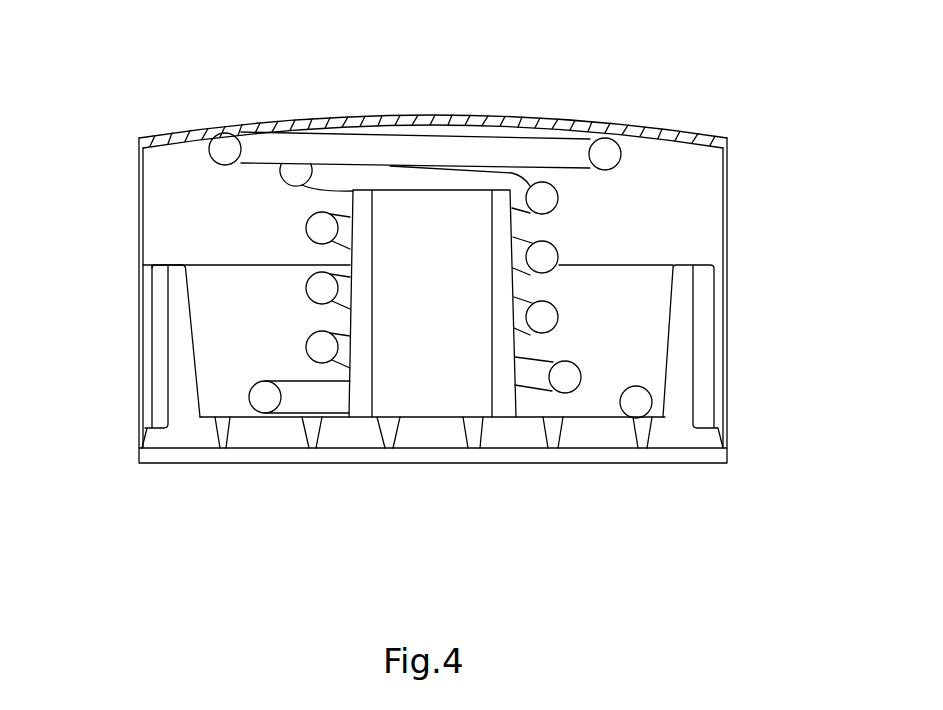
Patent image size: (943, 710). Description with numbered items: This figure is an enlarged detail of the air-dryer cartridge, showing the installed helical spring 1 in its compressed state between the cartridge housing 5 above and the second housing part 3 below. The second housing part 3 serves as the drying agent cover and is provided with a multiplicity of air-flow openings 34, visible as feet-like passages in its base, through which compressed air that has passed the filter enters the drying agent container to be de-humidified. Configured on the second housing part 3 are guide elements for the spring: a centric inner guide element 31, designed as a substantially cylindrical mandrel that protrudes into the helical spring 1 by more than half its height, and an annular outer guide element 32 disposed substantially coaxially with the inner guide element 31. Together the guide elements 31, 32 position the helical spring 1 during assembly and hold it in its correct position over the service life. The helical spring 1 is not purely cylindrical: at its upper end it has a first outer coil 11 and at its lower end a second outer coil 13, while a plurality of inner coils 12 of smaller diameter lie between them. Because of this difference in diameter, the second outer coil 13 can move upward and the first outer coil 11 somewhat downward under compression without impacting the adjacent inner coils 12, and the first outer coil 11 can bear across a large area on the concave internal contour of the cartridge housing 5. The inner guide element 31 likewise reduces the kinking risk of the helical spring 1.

The helical spring 1 is at (428, 143).
The second housing part 3 is at (182, 435).
The cartridge housing 5 is at (697, 135).
The first outer coil 11 is at (605, 154).
The inner coils 12 is at (547, 205).
The second outer coil 13 is at (640, 404).
The inner guide element 31 is at (360, 368).
The outer guide element 32 is at (187, 365).
The air-flow openings 34 is at (223, 428).